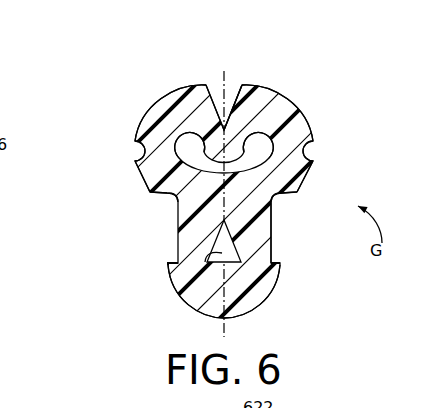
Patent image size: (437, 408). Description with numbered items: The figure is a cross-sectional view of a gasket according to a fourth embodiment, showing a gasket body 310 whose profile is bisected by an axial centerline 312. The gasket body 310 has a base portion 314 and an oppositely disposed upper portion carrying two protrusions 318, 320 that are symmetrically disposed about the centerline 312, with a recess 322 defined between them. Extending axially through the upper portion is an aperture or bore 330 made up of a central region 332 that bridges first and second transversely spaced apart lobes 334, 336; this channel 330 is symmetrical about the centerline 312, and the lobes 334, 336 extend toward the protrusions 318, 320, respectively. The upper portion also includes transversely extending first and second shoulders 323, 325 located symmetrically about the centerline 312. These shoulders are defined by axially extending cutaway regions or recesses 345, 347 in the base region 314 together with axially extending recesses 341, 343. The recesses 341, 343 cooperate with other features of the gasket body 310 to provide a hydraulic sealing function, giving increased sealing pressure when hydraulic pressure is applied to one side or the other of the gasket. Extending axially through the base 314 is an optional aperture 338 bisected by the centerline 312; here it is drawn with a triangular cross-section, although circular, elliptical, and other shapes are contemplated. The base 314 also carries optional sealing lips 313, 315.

The gasket body 310 is at (157, 210).
The axial centerline 312 is at (221, 320).
The sealing lip 313 is at (166, 266).
The base portion 314 is at (262, 258).
The sealing lip 315 is at (276, 270).
The protrusion 318 is at (175, 97).
The protrusion 320 is at (258, 93).
The recess 322 is at (220, 95).
The first shoulder 323 is at (150, 183).
The second shoulder 325 is at (307, 178).
The aperture or bore 330 is at (274, 212).
The central region 332 is at (242, 110).
The first lobe 334 is at (187, 140).
The second lobe 336 is at (262, 140).
The aperture 338 is at (206, 258).
The recess 341 is at (137, 149).
The recess 343 is at (307, 149).
The cutaway region 345 is at (166, 210).
The cutaway region 347 is at (283, 218).